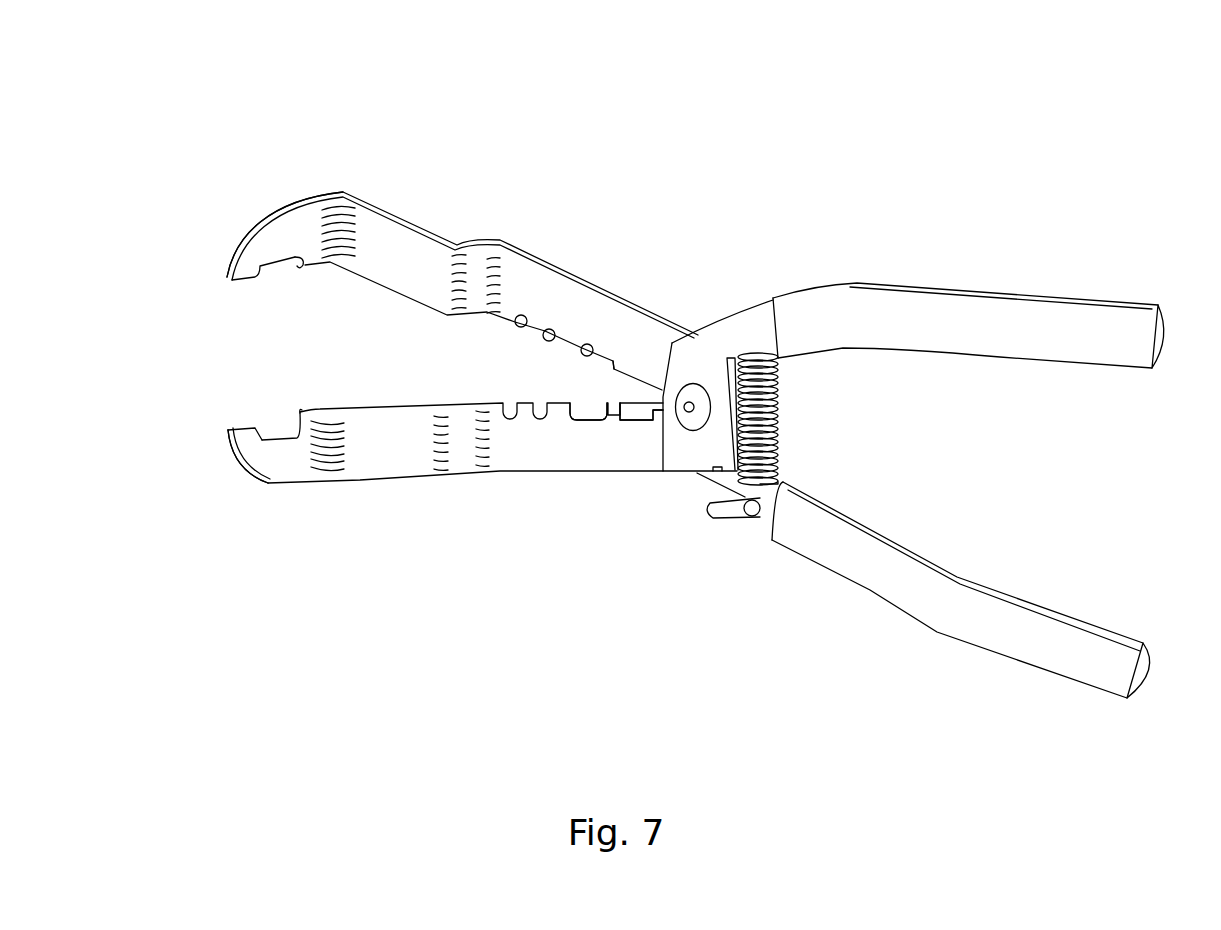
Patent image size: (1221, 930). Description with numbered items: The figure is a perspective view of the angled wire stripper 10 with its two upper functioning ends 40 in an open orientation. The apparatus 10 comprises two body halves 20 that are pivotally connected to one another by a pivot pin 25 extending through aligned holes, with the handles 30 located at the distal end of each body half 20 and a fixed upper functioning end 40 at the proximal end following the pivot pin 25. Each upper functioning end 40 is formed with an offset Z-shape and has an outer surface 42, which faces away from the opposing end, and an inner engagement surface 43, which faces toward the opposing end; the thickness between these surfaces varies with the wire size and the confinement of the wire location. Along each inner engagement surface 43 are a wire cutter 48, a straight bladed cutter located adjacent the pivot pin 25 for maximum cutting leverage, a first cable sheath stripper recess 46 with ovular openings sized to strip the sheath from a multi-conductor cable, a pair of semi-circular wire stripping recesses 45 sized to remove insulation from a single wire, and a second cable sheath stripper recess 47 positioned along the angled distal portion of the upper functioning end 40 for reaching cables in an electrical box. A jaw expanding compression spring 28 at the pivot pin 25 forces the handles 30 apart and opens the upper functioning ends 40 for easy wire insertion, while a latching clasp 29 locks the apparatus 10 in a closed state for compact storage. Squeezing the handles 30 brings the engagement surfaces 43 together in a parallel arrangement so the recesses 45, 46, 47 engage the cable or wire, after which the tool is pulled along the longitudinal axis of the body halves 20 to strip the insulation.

The angled wire stripper 10 is at (628, 116).
The body half 20 is at (1087, 327).
The pivot pin 25 is at (686, 404).
The jaw expanding compression spring 28 is at (781, 425).
The latching clasp 29 is at (735, 525).
The handles 30 is at (872, 333).
The upper functioning end 40 is at (295, 242).
The outer surface 42 is at (435, 235).
The inner engagement surface 43 is at (298, 412).
The wire stripping recesses 45 is at (536, 400).
The first cable sheath stripper recess 46 is at (612, 368).
The second cable sheath stripper recess 47 is at (252, 261).
The wire cutter 48 is at (642, 421).